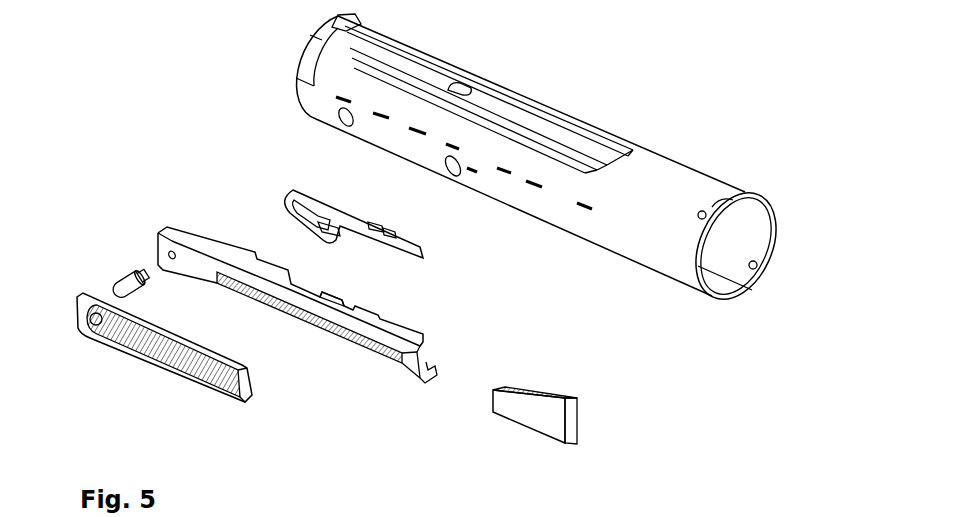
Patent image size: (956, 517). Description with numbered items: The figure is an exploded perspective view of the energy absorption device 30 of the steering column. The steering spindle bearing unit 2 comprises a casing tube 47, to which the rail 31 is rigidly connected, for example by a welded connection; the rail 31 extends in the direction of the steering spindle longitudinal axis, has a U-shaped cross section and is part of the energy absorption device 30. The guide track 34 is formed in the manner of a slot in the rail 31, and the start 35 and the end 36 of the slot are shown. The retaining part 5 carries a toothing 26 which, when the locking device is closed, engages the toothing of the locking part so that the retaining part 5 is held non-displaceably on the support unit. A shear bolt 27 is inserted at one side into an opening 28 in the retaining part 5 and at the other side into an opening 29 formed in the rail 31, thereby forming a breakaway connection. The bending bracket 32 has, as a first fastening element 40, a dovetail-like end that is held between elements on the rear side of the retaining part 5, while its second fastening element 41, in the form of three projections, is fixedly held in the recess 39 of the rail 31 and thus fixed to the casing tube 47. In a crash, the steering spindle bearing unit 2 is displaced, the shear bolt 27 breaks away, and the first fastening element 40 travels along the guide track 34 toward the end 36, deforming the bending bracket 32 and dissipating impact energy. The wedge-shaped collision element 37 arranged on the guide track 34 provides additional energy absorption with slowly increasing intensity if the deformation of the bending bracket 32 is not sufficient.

The steering spindle bearing unit 2 is at (629, 160).
The casing tube 47 is at (668, 182).
The start of the guide track 35 is at (222, 272).
The bending bracket 32 is at (290, 183).
The second fastening element 41 is at (375, 226).
The opening 29 is at (176, 250).
The shear bolt 27 is at (133, 277).
The opening 28 is at (86, 292).
The recess 39 is at (300, 293).
The first fastening element 40 is at (340, 229).
The end of the guide track 36 is at (400, 353).
The toothing 26 is at (137, 355).
The retaining part 5 is at (247, 400).
The guide track 34 is at (378, 358).
The rail 31 is at (416, 362).
The energy absorption device 30 is at (185, 412).
The collision element 37 is at (540, 415).